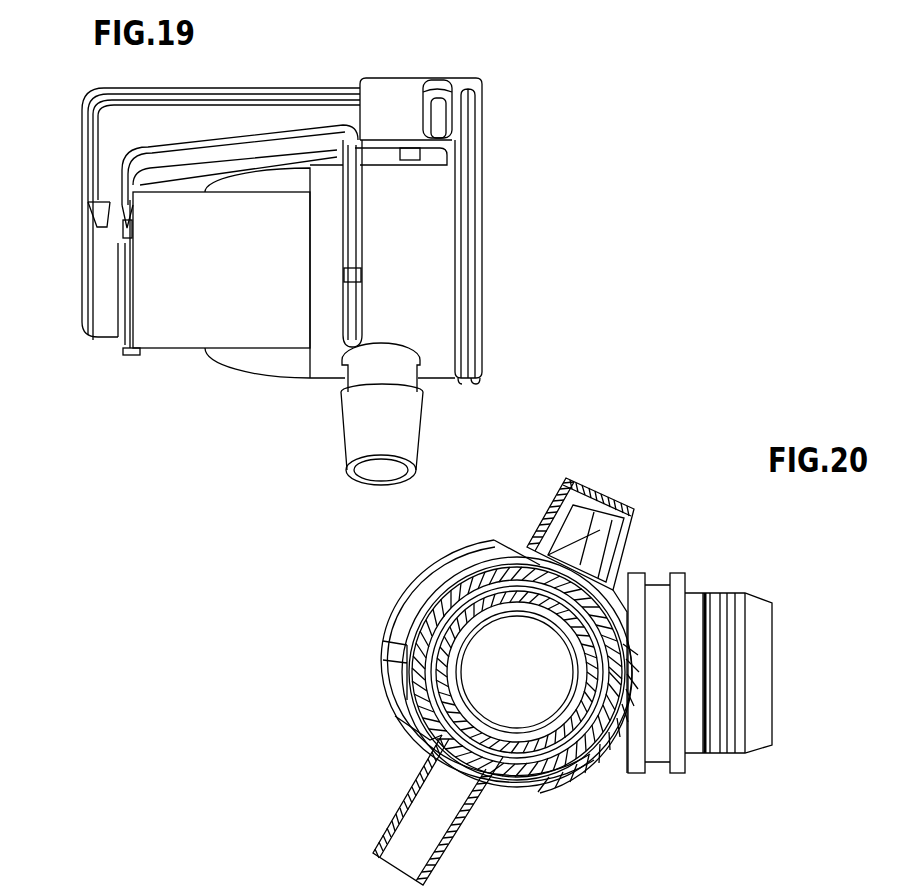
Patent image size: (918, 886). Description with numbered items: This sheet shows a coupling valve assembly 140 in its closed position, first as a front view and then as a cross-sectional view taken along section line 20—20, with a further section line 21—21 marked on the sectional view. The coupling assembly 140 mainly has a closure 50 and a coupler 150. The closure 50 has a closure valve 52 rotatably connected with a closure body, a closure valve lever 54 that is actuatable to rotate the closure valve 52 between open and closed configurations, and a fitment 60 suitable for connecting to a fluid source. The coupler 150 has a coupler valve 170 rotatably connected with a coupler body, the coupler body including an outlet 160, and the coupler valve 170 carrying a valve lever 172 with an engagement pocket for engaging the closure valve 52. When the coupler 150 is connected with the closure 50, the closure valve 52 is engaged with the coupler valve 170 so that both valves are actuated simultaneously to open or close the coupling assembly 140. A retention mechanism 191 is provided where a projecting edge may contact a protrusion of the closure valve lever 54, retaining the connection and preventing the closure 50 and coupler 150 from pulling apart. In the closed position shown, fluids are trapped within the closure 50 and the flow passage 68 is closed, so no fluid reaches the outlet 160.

In FIG. 19, the section line 20— 20 is at (383, 507).
In FIG. 20, the section line 21— 21 is at (850, 673).
In FIG. 19, the closure 50 is at (125, 362).
In FIG. 19, the closure valve 52 is at (80, 226).
In FIG. 19, the closure valve lever 54 is at (163, 120).
In FIG. 20, the closure valve lever 54 is at (600, 532).
In FIG. 20, the fitment 60 is at (752, 593).
In FIG. 20, the flow passage 68 is at (522, 657).
In FIG. 19, the coupling valve assembly 140 is at (405, 57).
In FIG. 19, the coupler 150 is at (507, 198).
In FIG. 19, the outlet 160 is at (422, 432).
In FIG. 20, the outlet 160 is at (457, 848).
In FIG. 19, the coupler valve 170 is at (403, 88).
In FIG. 20, the valve lever 172 is at (600, 493).
In FIG. 19, the retention mechanism 191 is at (370, 174).